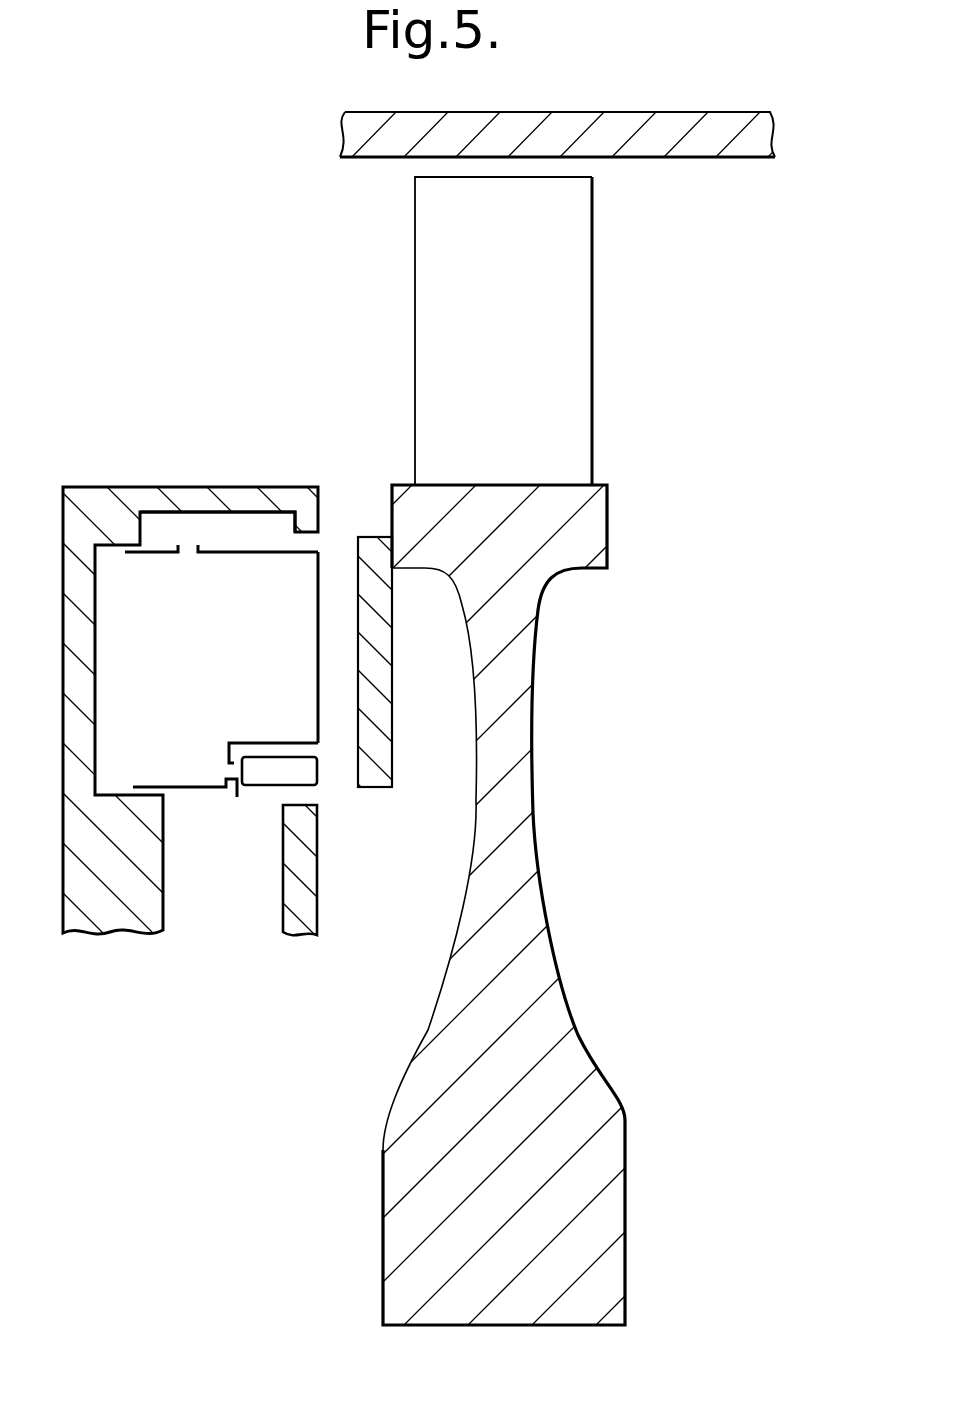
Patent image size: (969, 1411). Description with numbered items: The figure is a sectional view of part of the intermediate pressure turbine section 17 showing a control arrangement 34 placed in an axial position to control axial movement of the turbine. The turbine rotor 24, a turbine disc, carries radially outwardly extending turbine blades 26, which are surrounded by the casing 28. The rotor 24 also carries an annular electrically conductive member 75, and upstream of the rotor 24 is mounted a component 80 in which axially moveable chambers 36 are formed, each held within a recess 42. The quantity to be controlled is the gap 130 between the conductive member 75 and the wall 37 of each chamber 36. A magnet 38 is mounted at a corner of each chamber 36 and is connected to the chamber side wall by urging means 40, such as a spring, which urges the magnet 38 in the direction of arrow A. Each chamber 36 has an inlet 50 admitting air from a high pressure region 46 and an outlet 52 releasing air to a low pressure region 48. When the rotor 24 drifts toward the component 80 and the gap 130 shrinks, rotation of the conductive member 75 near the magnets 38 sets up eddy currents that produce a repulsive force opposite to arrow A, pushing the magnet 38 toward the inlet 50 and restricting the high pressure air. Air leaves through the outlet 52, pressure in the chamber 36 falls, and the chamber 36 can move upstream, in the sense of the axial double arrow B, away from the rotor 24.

The intermediate pressure turbine section 17 is at (484, 900).
The turbine rotor 24 is at (522, 817).
The turbine blades 26 is at (578, 383).
The casing 28 is at (694, 137).
The control arrangement 34 is at (190, 930).
The chamber 36 is at (148, 587).
The wall 37 is at (320, 612).
The magnet 38 is at (320, 771).
The urging means 40 is at (347, 743).
The recess 42 is at (207, 581).
The high pressure region 46 is at (235, 912).
The low pressure region 48 is at (227, 532).
The inlet 50 is at (237, 797).
The outlet 52 is at (187, 543).
The electrically conductive member 75 is at (378, 688).
The component 80 is at (83, 935).
The gap 130 is at (335, 577).
The arrow A is at (300, 768).
The direction B is at (185, 578).